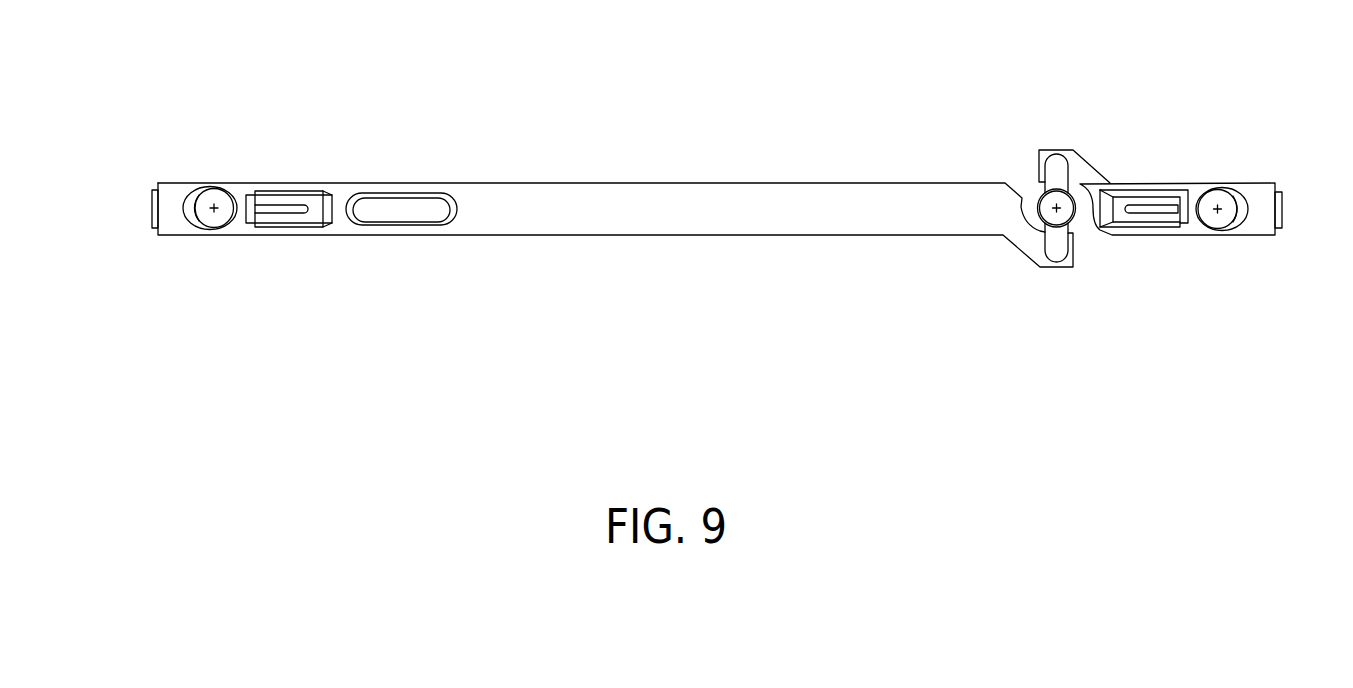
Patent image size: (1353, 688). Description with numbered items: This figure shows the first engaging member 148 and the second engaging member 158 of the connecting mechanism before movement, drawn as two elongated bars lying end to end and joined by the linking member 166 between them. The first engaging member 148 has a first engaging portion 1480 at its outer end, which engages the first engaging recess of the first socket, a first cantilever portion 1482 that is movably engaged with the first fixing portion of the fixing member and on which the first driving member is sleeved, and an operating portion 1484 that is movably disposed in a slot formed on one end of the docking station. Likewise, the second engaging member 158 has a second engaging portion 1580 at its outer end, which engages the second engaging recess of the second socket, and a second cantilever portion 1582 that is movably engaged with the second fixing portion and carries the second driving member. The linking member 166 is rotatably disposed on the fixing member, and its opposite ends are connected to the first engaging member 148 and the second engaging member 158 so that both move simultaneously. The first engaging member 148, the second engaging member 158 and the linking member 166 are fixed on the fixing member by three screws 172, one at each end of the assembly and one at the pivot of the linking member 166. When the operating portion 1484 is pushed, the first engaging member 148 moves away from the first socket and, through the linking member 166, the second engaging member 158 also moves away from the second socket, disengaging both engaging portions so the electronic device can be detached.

The first engaging member 148 is at (745, 210).
The first engaging portion 1480 is at (151, 208).
The first cantilever portion 1482 is at (289, 208).
The operating portion 1484 is at (400, 210).
The second engaging member 158 is at (1252, 183).
The second engaging portion 1580 is at (1282, 208).
The second cantilever portion 1582 is at (1147, 207).
The linking member 166 is at (1055, 175).
The screw 172 is at (214, 200).